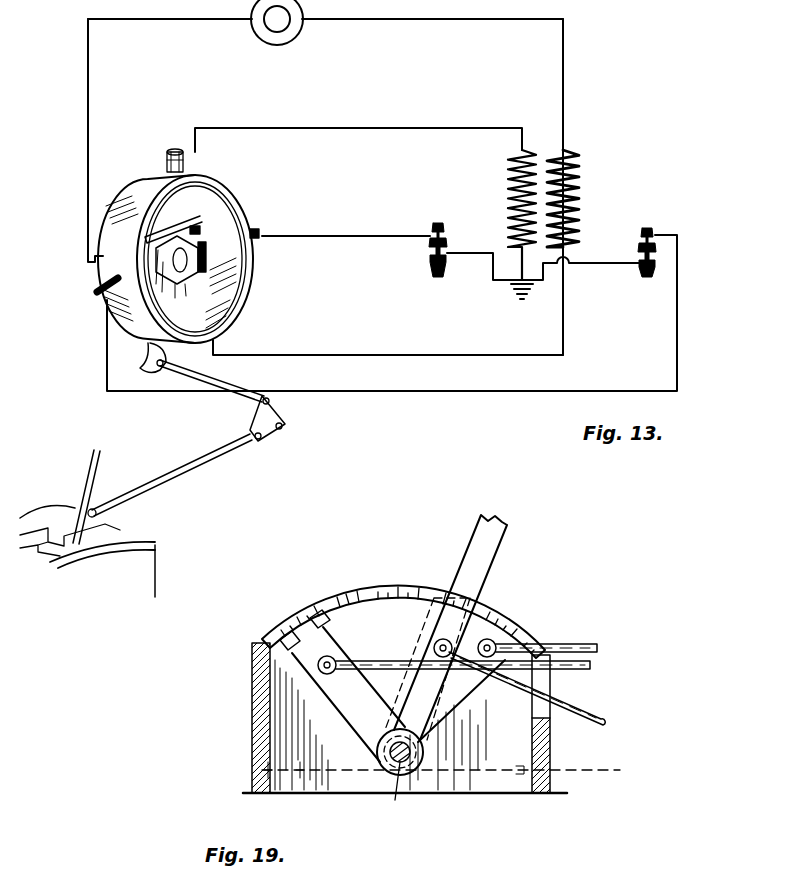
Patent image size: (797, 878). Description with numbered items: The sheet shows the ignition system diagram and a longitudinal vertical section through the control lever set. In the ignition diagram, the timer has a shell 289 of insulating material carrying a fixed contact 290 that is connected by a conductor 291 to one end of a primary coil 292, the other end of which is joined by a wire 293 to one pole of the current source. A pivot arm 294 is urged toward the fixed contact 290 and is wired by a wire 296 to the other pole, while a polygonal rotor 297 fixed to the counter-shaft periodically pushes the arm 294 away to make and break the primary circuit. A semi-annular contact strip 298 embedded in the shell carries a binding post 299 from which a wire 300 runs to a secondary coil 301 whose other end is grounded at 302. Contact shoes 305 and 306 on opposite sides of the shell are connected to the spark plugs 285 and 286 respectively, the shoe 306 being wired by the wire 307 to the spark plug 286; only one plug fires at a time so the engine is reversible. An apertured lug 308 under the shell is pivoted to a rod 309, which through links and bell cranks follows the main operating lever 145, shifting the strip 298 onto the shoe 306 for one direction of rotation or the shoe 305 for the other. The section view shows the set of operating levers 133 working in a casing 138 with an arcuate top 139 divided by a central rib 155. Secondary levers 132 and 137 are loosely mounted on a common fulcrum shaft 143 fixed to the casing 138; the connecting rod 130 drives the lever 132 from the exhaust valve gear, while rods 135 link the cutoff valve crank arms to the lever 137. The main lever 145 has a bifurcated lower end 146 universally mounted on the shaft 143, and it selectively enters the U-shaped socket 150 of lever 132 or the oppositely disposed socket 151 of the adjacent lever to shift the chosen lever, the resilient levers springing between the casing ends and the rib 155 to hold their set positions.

In FIG. 13, the wire 293 is at (325, 28).
In FIG. 13, the wire 300 is at (430, 130).
In FIG. 13, the secondary coil 301 is at (508, 180).
In FIG. 13, the primary coil 292 is at (580, 176).
In FIG. 13, the binding post 299 is at (166, 150).
In FIG. 13, the contact strip 298 is at (128, 188).
In FIG. 13, the pivot arm 294 is at (200, 214).
In FIG. 13, the contact shoe / wire 306 is at (270, 235).
In FIG. 13, the wire 307 is at (384, 234).
In FIG. 13, the fixed contact 290 is at (205, 236).
In FIG. 13, the spark plug 286 is at (428, 262).
In FIG. 13, the spark plug 285 is at (656, 264).
In FIG. 13, the wire 296 is at (95, 264).
In FIG. 13, the polygonal rotor 297 is at (208, 268).
In FIG. 13, the contact shoe 305 is at (103, 292).
In FIG. 13, the ground 302 is at (518, 300).
In FIG. 13, the shell 289 is at (218, 324).
In FIG. 13, the conductor 291 is at (408, 352).
In FIG. 13, the apertured lug 308 is at (148, 358).
In FIG. 13, the rod 309 is at (202, 386).
In FIG. 13, the main operating lever 145 is at (100, 458).
In FIG. 19, the main operating lever 145 is at (486, 548).
In FIG. 13, the casing 138 is at (160, 548).
In FIG. 19, the casing 138 is at (552, 780).
In FIG. 19, the U-shaped socket 151 is at (290, 636).
In FIG. 19, the arcuate top 139 is at (346, 604).
In FIG. 19, the central dividing rib 155 is at (404, 592).
In FIG. 19, the secondary lever 137 is at (478, 628).
In FIG. 19, the rod 135 is at (592, 644).
In FIG. 19, the U-shaped socket 150 is at (468, 604).
In FIG. 19, the set of operating levers 133 is at (250, 686).
In FIG. 19, the secondary lever 132 is at (395, 700).
In FIG. 19, the connecting rod 130 is at (604, 712).
In FIG. 19, the bifurcated lower end 146 is at (384, 740).
In FIG. 19, the fulcrum shaft 143 is at (400, 789).